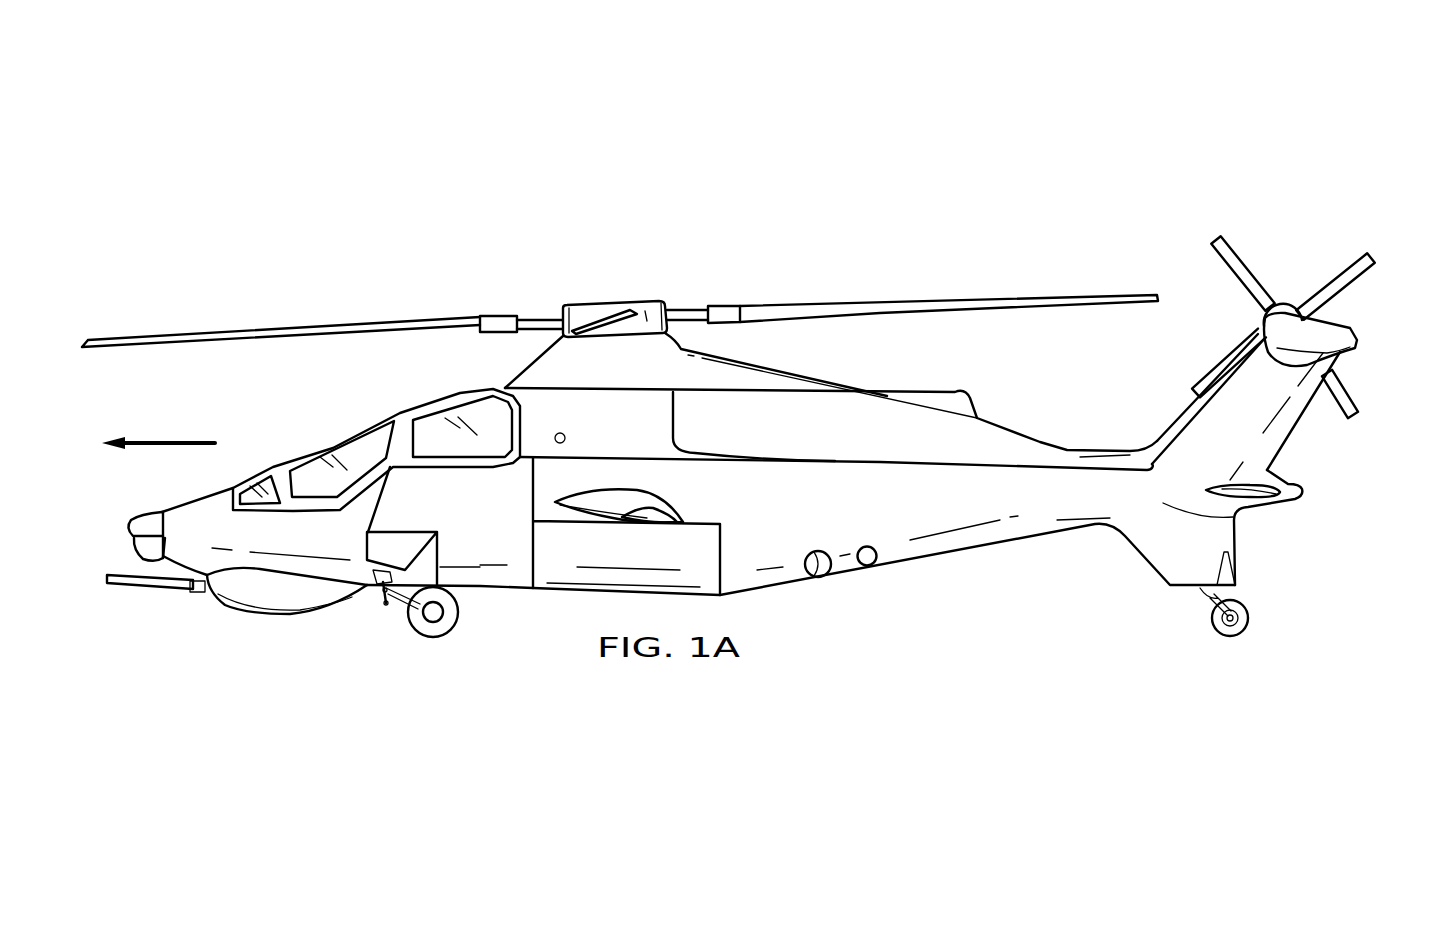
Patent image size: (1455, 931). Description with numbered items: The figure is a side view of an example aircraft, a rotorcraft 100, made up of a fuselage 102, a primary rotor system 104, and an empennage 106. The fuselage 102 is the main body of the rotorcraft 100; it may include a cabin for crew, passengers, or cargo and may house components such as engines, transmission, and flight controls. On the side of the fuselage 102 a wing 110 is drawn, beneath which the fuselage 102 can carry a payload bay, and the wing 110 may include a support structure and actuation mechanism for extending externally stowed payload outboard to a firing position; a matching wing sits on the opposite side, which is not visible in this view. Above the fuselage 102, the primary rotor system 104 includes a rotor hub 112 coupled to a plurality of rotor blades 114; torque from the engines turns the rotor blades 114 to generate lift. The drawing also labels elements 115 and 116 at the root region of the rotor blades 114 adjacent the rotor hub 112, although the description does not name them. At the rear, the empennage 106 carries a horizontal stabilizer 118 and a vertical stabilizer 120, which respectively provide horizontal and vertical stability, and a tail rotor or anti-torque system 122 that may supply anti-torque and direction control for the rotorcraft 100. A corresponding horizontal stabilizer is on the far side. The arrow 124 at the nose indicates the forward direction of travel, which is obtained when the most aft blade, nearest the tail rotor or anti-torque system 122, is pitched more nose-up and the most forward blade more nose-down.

The rotorcraft 100 is at (375, 97).
The fuselage 102 is at (830, 487).
The primary rotor system 104 is at (645, 200).
The empennage 106 is at (1378, 320).
The wing 110 is at (631, 490).
The rotor hub 112 is at (633, 290).
The rotor blades 114 is at (310, 327).
The blade root fittings 115 is at (517, 314).
The hub fairing 116 is at (602, 302).
The horizontal stabilizer 118 is at (1258, 500).
The vertical stabilizer 120 is at (1298, 424).
The tail rotor or anti-torque system 122 is at (1336, 273).
The arrow 124 is at (174, 440).